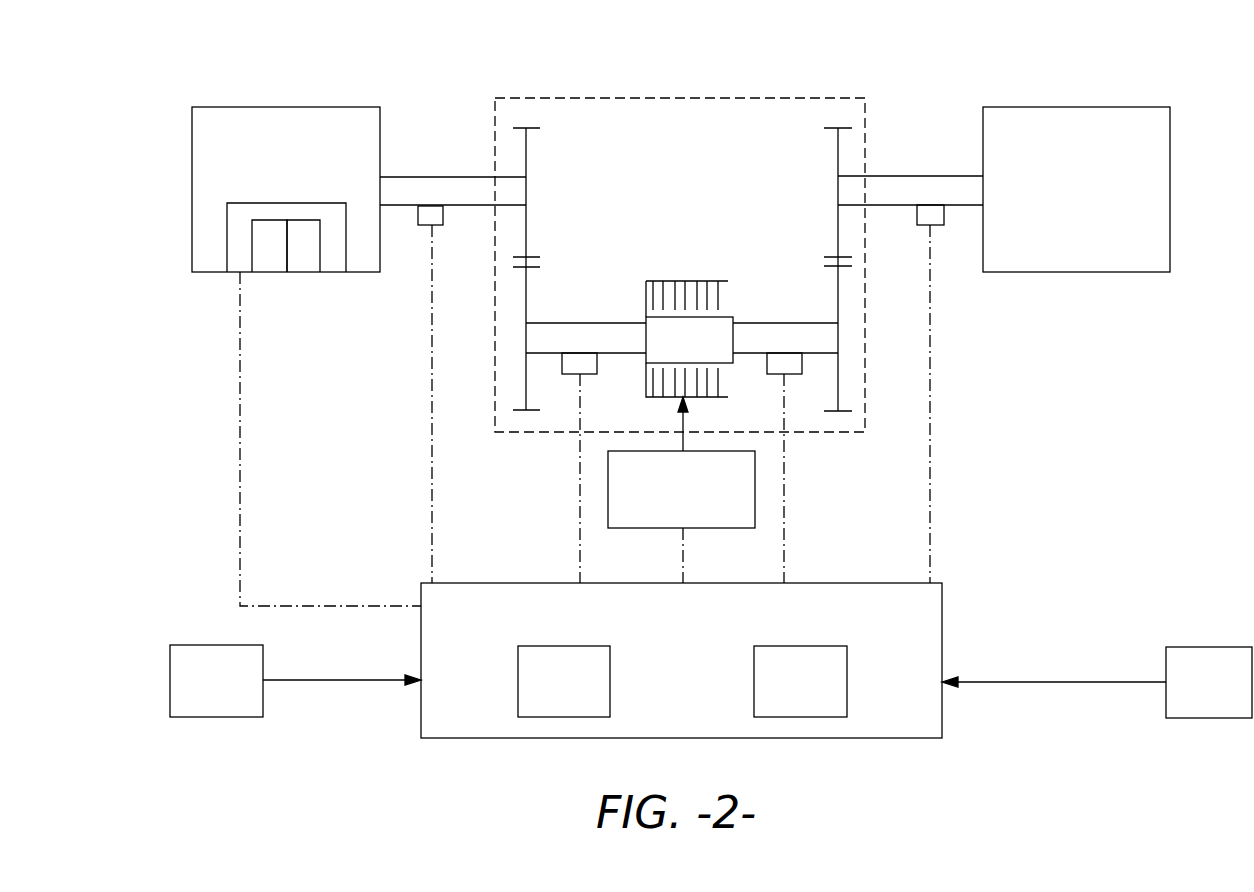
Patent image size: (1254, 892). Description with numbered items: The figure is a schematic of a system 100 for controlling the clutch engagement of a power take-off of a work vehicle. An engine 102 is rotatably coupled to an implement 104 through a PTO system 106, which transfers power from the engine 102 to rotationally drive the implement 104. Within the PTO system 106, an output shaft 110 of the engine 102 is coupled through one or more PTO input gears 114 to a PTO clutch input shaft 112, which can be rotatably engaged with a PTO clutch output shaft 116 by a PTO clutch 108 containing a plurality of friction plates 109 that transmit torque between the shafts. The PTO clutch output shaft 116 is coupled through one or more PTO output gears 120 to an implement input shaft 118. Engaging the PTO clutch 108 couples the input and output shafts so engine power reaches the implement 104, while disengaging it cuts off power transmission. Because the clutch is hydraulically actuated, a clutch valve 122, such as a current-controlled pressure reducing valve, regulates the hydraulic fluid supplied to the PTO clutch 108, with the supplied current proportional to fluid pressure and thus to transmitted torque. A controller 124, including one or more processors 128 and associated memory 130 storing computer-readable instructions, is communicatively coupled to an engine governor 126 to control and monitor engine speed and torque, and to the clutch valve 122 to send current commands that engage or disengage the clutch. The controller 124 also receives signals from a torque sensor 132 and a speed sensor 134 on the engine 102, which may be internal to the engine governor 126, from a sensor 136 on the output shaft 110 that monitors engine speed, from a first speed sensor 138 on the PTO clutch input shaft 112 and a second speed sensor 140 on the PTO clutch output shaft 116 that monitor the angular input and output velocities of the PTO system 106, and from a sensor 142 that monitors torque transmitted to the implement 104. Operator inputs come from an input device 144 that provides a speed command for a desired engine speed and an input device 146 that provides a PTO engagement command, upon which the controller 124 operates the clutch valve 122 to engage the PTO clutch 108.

The system 100 is at (165, 146).
The engine 102 is at (286, 189).
The implement 104 is at (1076, 189).
The power take-off (PTO) system 106 is at (793, 98).
The PTO clutch 108 is at (709, 308).
The friction plates 109 is at (682, 292).
The output shaft 110 is at (487, 175).
The PTO clutch input shaft 112 is at (618, 322).
The PTO input gears 114 is at (526, 300).
The PTO clutch output shaft 116 is at (747, 320).
The implement input shaft 118 is at (880, 173).
The PTO output gears 120 is at (838, 300).
The clutch valve 122 is at (667, 530).
The controller 124 is at (681, 634).
The engine governor 126 is at (346, 250).
The processor 128 is at (564, 681).
The memory 130 is at (800, 681).
The torque sensor 132 is at (268, 265).
The speed sensor 134 is at (302, 265).
The sensor 136 is at (443, 216).
The first speed sensor 138 is at (597, 365).
The second speed sensor 140 is at (767, 365).
The sensor 142 is at (917, 217).
The input device 144 is at (295, 670).
The input device 146 is at (1097, 670).